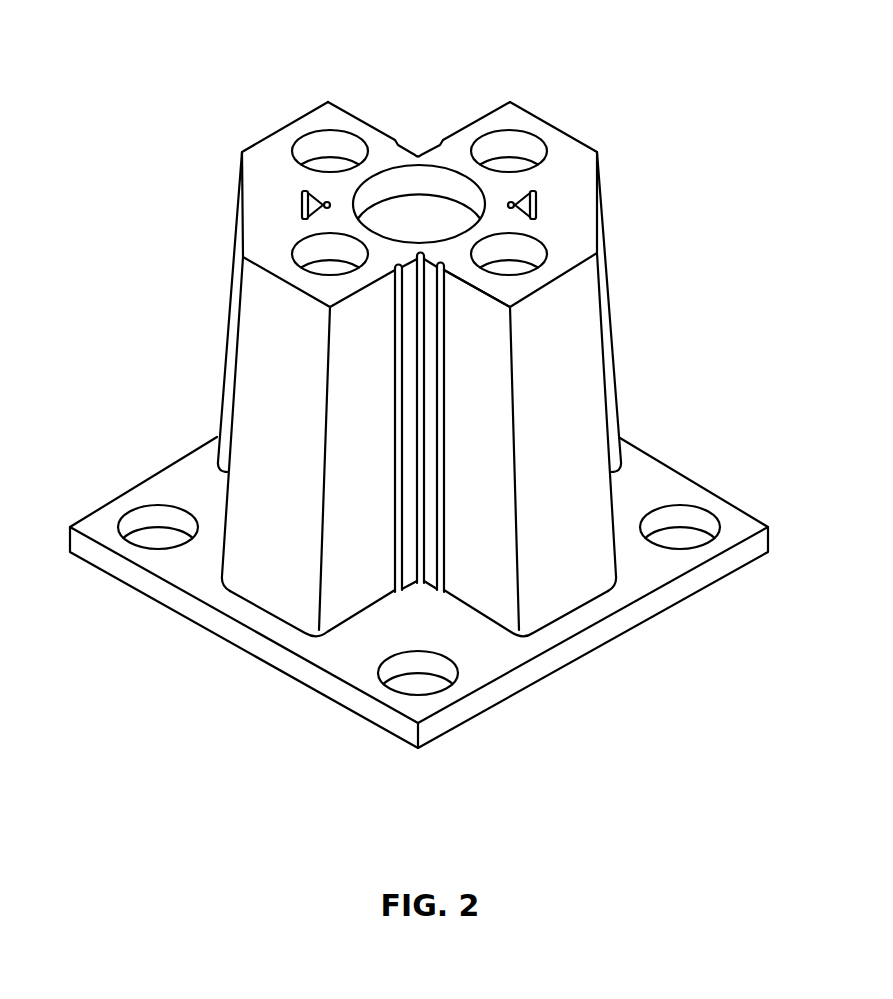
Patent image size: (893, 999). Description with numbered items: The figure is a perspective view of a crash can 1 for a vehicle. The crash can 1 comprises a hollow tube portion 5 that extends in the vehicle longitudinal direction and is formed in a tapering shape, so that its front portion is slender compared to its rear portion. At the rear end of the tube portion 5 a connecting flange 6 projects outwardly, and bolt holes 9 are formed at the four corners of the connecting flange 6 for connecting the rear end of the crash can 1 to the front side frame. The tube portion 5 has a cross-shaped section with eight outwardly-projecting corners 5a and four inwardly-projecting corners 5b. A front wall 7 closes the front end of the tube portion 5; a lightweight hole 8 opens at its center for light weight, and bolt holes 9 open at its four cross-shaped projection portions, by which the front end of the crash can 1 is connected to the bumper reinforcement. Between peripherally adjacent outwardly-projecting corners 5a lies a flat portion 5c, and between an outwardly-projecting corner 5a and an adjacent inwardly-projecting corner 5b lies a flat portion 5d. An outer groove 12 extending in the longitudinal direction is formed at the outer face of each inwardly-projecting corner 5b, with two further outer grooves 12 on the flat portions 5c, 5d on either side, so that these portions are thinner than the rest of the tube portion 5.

The crash can 1 is at (670, 92).
The tube portion 5 is at (605, 243).
The outwardly-projecting corner 5a is at (223, 370).
The inwardly-projecting corner 5b is at (425, 503).
The flat portion 5c is at (283, 573).
The flat portion 5d is at (252, 180).
The connecting flange 6 is at (680, 470).
The front wall 7 is at (268, 145).
The lightweight hole 8 is at (442, 187).
The bolt hole 9 is at (523, 147).
The outer groove 12 is at (442, 140).